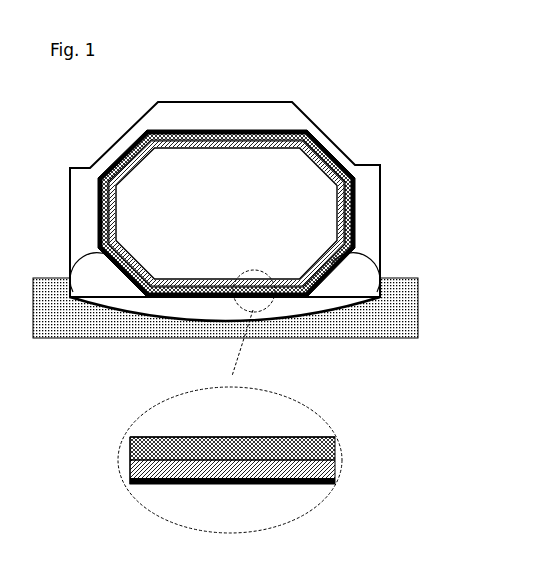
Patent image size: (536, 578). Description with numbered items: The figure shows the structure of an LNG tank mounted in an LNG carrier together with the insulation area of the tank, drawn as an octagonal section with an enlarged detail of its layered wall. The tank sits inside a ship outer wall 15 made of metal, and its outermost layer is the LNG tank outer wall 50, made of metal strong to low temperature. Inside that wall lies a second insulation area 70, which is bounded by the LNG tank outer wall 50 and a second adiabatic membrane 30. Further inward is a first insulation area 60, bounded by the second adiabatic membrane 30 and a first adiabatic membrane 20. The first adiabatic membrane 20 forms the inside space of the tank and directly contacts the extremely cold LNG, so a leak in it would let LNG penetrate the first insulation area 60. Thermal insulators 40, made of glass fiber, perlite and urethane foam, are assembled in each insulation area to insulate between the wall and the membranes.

The ship outer wall 15 is at (140, 120).
The first adiabatic membrane 20 is at (136, 171).
The second adiabatic membrane 30 is at (200, 145).
The thermal insulators 40 is at (335, 206).
The LNG tank outer wall 50 is at (265, 129).
The first insulation area 60 is at (337, 441).
The second insulation area 70 is at (337, 465).